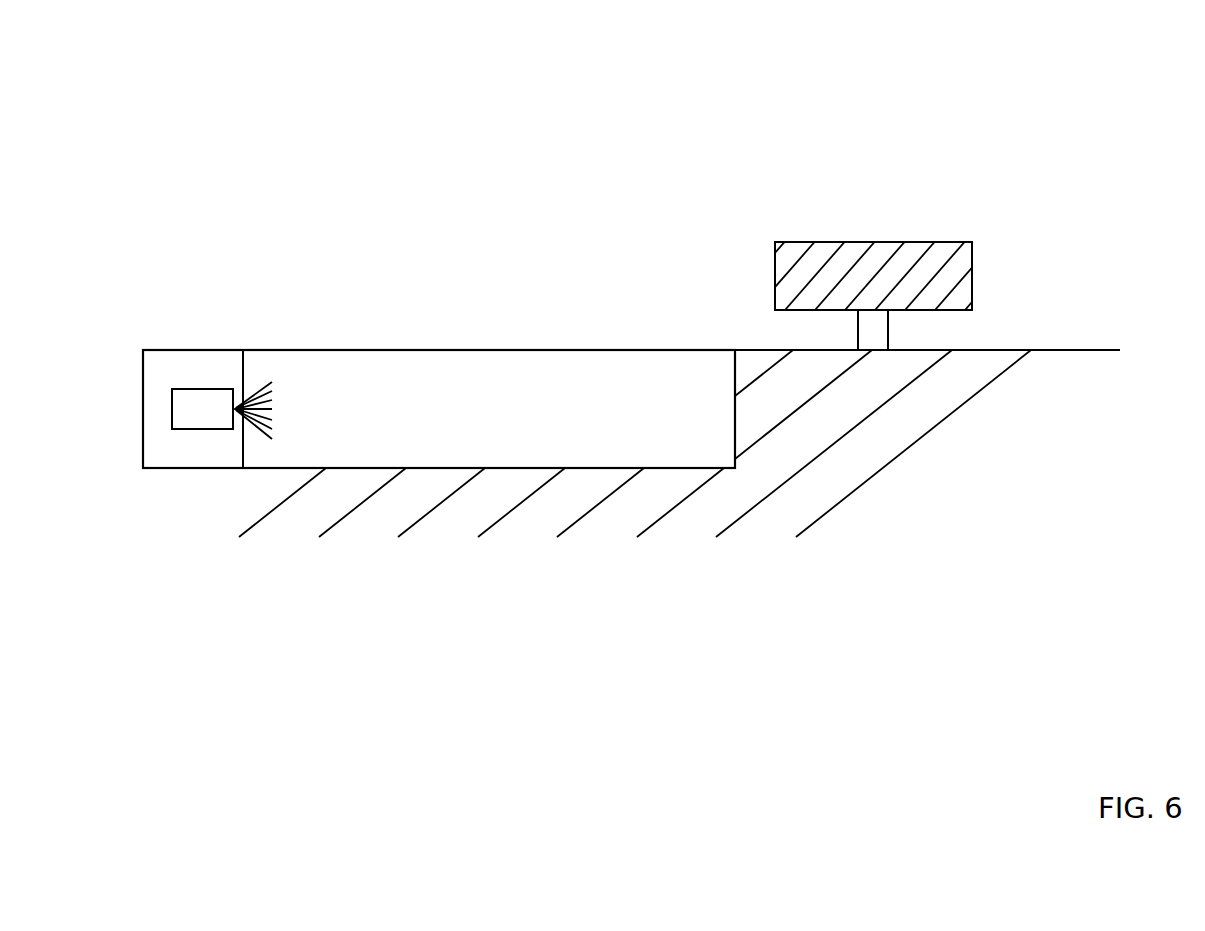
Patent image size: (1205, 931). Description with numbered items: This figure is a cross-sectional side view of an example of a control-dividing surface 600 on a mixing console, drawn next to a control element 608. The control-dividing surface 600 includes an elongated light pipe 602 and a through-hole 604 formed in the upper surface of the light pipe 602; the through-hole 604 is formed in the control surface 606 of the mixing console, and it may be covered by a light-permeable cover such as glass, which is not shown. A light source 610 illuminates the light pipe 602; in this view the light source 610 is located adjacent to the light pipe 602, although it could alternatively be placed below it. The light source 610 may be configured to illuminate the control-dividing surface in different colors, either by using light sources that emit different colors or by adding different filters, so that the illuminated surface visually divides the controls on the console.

The control-dividing surface 600 is at (731, 119).
The light pipe 602 is at (351, 418).
The through-hole 604 is at (420, 350).
The control surface 606 is at (1060, 350).
The control element 608 is at (960, 242).
The light source 610 is at (222, 389).